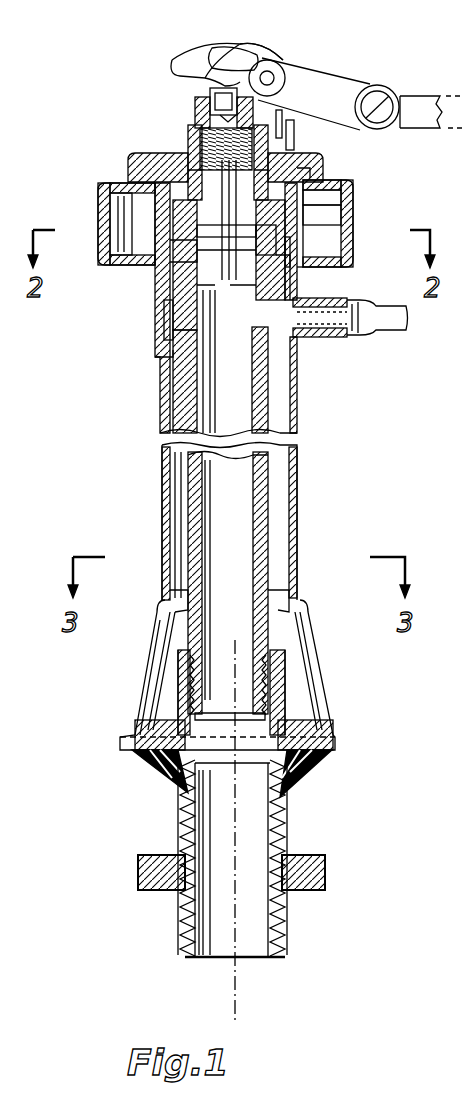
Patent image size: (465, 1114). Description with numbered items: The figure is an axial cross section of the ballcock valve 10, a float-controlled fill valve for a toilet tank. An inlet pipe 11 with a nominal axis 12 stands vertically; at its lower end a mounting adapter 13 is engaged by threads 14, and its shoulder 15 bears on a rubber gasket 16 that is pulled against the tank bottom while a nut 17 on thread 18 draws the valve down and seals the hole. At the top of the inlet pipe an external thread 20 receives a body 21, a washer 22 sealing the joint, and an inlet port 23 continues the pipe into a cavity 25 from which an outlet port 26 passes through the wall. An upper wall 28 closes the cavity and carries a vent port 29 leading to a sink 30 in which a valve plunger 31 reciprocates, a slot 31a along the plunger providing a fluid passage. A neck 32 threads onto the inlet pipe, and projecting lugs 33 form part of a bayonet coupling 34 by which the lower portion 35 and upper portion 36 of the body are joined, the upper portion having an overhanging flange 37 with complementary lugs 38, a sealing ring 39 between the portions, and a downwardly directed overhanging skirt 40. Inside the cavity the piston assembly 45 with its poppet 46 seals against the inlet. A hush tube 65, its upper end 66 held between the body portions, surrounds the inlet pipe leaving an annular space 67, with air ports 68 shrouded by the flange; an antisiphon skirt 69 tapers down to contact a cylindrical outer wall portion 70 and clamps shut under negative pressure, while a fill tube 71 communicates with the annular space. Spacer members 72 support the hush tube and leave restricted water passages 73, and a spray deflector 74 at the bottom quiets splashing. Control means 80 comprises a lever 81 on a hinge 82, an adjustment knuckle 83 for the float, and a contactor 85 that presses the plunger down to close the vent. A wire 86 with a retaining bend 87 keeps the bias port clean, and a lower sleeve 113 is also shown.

The ballcock valve 10 is at (328, 448).
The inlet pipe 11 is at (270, 530).
The nominal axis 12 is at (235, 975).
The mounting adapter 13 is at (333, 808).
The threads 14 is at (270, 697).
The shoulder 15 is at (317, 750).
The rubber gasket 16 is at (173, 757).
The nut 17 is at (325, 880).
The thread 18 is at (187, 910).
The external thread 20 is at (280, 327).
The body 21 is at (170, 322).
The washer 22 is at (157, 283).
The inlet port 23 is at (240, 262).
The cavity 25 is at (200, 230).
The outlet port 26 is at (262, 230).
The upper wall 28 is at (285, 103).
The vent port 29 is at (190, 120).
The sink 30 is at (207, 97).
The valve plunger 31 is at (207, 86).
The slot 31a is at (295, 56).
The neck 32 is at (170, 357).
The projecting lugs 33 is at (297, 150).
The bayonet coupling 34 is at (300, 175).
The lower portion 35 is at (290, 257).
The upper portion 36 is at (185, 138).
The overhanging flange 37 is at (350, 200).
The complementary lugs 38 is at (300, 187).
The sealing ring 39 is at (187, 177).
The overhanging skirt 40 is at (347, 265).
The piston assembly 45 is at (183, 163).
The poppet 46 is at (98, 185).
The hush tube 65 is at (297, 500).
The upper end 66 is at (133, 198).
The annular space 67 is at (183, 523).
The air ports 68 is at (290, 250).
The antisiphon skirt 69 is at (167, 247).
The cylindrical outer wall portion 70 is at (173, 313).
The fill tube 71 is at (350, 318).
The spacer members 72 is at (280, 597).
The restricted water passages 73 is at (177, 597).
The spray deflector 74 is at (137, 708).
The control means 80 is at (392, 68).
The lever 81 is at (283, 62).
The hinge 82 is at (267, 78).
The adjustment knuckle 83 is at (400, 128).
The contactor 85 is at (200, 76).
The wire 86 is at (307, 218).
The bend 87 is at (195, 160).
The lower sleeve 113 is at (217, 355).